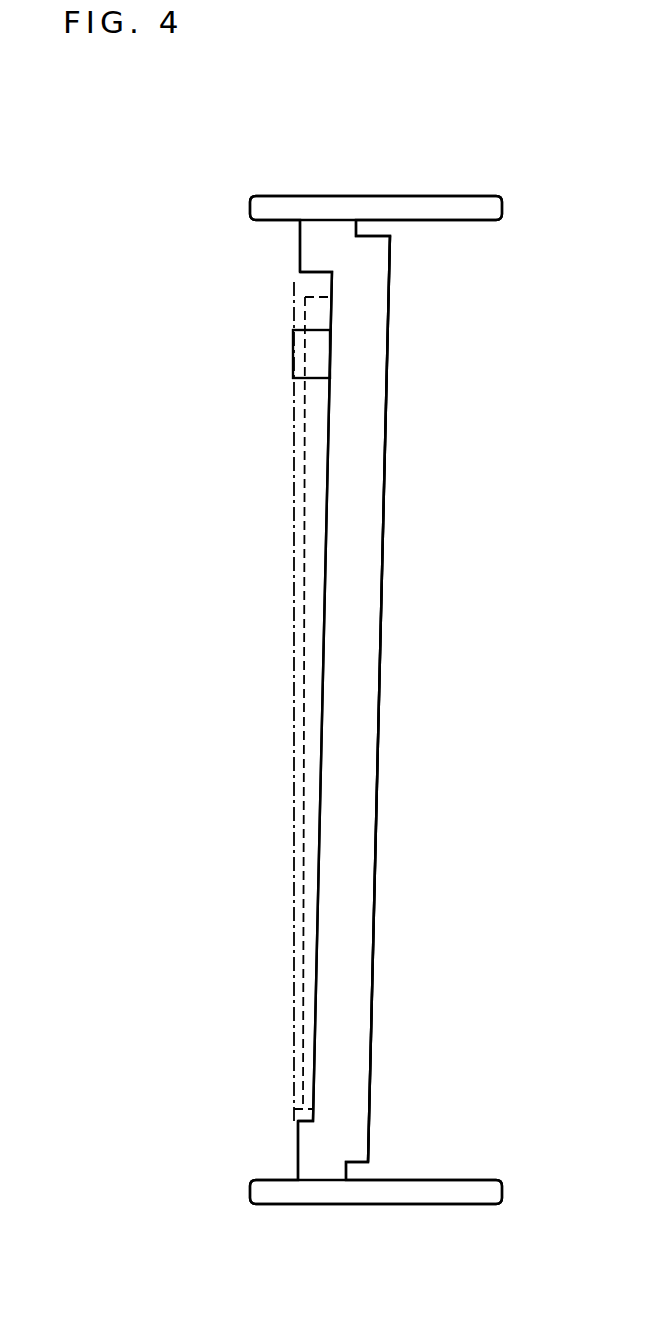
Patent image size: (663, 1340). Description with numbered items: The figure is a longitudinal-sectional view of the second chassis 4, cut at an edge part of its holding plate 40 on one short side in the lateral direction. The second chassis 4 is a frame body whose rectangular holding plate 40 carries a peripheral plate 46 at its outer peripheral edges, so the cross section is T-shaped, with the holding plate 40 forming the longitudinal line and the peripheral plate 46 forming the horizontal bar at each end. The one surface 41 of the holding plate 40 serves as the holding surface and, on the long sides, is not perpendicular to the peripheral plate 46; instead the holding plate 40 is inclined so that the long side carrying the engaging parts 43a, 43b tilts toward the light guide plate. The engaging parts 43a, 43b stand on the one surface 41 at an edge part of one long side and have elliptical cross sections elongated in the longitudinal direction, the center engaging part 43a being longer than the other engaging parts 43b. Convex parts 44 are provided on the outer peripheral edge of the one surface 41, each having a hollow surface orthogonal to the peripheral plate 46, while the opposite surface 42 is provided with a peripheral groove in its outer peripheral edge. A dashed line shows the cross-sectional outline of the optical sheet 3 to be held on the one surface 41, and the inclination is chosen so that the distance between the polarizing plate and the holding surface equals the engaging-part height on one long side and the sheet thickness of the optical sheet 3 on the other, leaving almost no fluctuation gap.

The second chassis 4 is at (369, 191).
The peripheral plate 46 is at (443, 199).
The convex part 44 is at (300, 238).
The one surface 41 is at (332, 284).
The surface 42 is at (390, 269).
The holding plate 40 is at (372, 357).
The center engaging part 43a is at (293, 355).
The other engaging part 43b is at (311, 354).
The optical sheet 3 is at (310, 452).